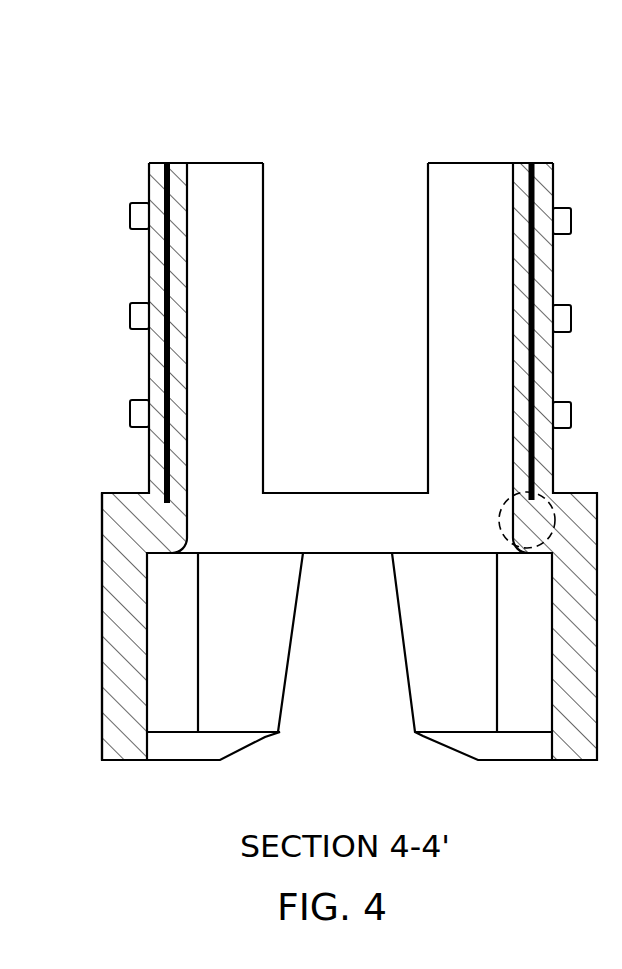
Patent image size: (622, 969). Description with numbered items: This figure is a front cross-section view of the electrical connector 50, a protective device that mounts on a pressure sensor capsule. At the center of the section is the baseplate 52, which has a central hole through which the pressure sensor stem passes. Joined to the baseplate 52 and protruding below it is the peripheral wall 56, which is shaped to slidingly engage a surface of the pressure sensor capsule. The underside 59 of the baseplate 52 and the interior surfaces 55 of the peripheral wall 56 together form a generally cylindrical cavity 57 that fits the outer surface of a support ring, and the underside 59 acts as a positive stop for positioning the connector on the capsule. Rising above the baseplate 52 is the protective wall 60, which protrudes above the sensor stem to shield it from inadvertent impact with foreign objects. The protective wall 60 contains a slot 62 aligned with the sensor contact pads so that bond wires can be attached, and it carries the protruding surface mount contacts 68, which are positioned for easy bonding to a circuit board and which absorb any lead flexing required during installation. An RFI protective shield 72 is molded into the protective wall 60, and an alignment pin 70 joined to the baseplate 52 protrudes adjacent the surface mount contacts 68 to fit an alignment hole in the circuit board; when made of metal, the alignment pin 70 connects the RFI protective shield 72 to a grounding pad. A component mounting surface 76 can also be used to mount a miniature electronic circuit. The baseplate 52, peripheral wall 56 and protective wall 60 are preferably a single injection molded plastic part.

The electrical connector 50 is at (426, 123).
The baseplate 52 is at (347, 537).
The interior surfaces 55 is at (148, 648).
The peripheral wall 56 is at (125, 740).
The cylindrical cavity 57 is at (347, 702).
The underside 59 is at (257, 553).
The protective wall 60 is at (216, 162).
The slot 62 is at (338, 423).
The surface mount contacts 68 is at (130, 208).
The alignment pin 70 is at (498, 522).
The RFI protective shield 72 is at (168, 162).
The component mounting surface 76 is at (102, 635).